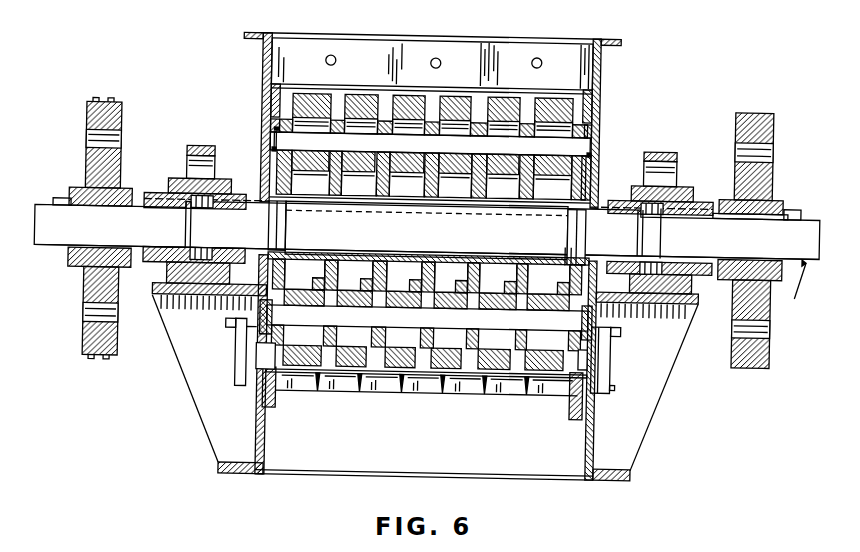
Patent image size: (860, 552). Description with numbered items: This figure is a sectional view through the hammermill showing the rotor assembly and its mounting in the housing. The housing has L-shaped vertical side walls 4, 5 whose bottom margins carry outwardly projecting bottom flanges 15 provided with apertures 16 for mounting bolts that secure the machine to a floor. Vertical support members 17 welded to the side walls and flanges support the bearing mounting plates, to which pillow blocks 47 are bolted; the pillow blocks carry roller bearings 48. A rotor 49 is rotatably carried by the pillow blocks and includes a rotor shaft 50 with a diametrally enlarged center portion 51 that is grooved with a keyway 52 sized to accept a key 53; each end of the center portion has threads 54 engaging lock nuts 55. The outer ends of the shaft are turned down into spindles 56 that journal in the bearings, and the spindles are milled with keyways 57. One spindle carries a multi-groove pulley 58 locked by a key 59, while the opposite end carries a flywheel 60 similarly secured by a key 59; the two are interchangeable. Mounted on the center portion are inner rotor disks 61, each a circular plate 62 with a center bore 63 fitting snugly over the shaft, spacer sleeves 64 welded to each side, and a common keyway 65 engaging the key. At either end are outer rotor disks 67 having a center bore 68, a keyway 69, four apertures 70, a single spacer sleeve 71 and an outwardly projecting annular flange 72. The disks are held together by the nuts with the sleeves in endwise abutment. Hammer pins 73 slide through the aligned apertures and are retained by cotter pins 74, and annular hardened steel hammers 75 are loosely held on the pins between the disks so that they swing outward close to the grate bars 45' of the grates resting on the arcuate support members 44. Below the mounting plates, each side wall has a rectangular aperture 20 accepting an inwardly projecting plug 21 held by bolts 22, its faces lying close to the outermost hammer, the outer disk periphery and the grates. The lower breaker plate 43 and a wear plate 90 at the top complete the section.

The wear plate 90 is at (508, 40).
The annular hardened steel hammers 75 is at (415, 99).
The apertures 70 is at (432, 135).
The cotter pin 74 is at (268, 128).
The hammer pins 73 is at (266, 145).
The annular flanges 72 is at (596, 136).
The circular plate 62 is at (328, 176).
The keyway 65 is at (330, 200).
The outer rotor disks 67 is at (589, 195).
The multi-groove pulley 58 is at (120, 114).
The flywheel 60 is at (734, 115).
The keyways 57 is at (50, 207).
The key 59 is at (796, 206).
The roller bearings 48 is at (215, 190).
The pillow blocks 47 is at (676, 183).
The spindles 56 is at (185, 227).
The lock nuts 55 is at (590, 210).
The center portion 51 is at (268, 227).
The rotor shaft 50 is at (57, 249).
The rotor 49 is at (795, 290).
The key 53 is at (416, 213).
The keyway 52 is at (480, 213).
The spacer sleeve 71 is at (566, 215).
The keyway 69 is at (572, 214).
The center bore 68 is at (567, 258).
The threads 54 is at (290, 250).
The spacer sleeves 64 is at (366, 262).
The center bore 63 is at (432, 262).
The inner rotor disks 61 is at (474, 262).
The lower breaker plate 43 is at (418, 288).
The grate bars 45' is at (426, 400).
The arcuate support members 44 is at (280, 410).
The plug 21 is at (258, 353).
The bolts 22 is at (623, 328).
The rectangular aperture 20 is at (613, 362).
The side wall 4 is at (258, 423).
The side wall 5 is at (597, 423).
The vertical support members 17 is at (641, 450).
The apertures 16 is at (240, 477).
The bottom flanges 15 is at (613, 480).